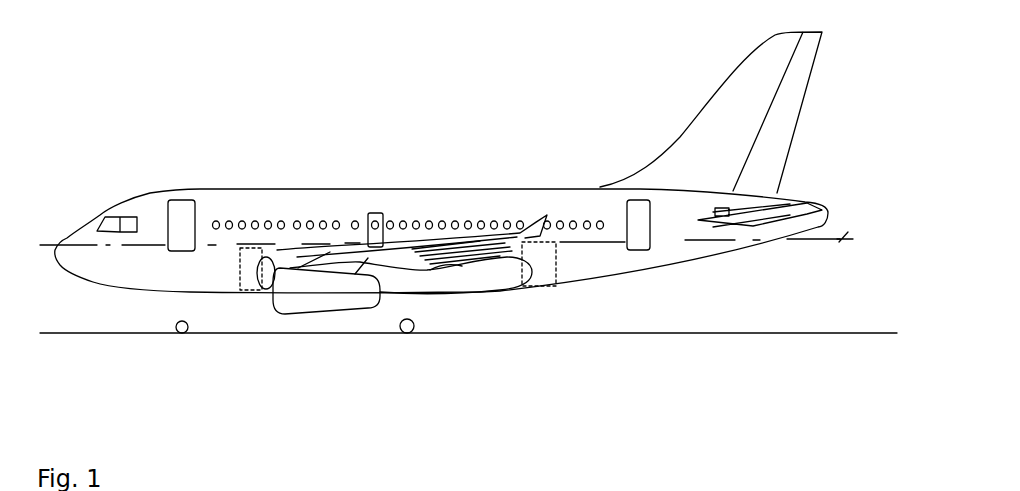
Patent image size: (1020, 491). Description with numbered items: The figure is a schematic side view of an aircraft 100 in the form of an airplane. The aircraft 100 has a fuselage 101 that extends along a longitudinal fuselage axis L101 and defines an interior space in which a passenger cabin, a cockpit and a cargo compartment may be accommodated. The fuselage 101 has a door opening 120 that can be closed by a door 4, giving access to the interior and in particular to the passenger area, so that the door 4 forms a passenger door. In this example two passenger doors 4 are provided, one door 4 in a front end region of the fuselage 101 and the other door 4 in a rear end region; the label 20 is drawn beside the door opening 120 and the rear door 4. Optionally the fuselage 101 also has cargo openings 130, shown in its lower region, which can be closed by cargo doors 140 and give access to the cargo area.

The aircraft 100 is at (512, 108).
The fuselage 101 is at (548, 186).
The door 4 is at (181, 215).
The door opening 120 is at (165, 223).
The door region 20 is at (652, 230).
The cargo opening 130 is at (253, 290).
The cargo door 140 is at (243, 270).
The longitudinal fuselage axis L101 is at (841, 236).